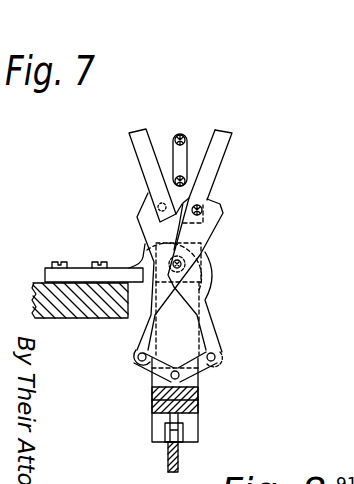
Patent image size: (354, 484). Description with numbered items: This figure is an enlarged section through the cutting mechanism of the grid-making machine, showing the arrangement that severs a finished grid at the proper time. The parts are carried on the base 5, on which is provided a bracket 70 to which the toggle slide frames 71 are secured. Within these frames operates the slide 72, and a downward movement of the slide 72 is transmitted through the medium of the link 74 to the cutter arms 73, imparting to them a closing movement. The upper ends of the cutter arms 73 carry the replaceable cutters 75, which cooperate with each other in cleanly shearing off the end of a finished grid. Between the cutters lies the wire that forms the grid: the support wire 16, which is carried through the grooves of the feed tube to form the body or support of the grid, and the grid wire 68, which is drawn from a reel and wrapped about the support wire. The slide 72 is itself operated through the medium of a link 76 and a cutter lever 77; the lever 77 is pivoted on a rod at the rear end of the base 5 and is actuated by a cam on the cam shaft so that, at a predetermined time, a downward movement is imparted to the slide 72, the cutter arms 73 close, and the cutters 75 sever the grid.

The base 5 is at (83, 318).
The bracket 70 is at (117, 271).
The cutter arms 73 is at (214, 218).
The replaceable cutters 75 is at (220, 162).
The grid wire 68 is at (187, 150).
The support wire 16 is at (180, 135).
The toggle slide frames 71 is at (176, 340).
The link 74 is at (150, 364).
The slide 72 is at (190, 391).
The link 76 is at (168, 420).
The cutter lever 77 is at (181, 461).